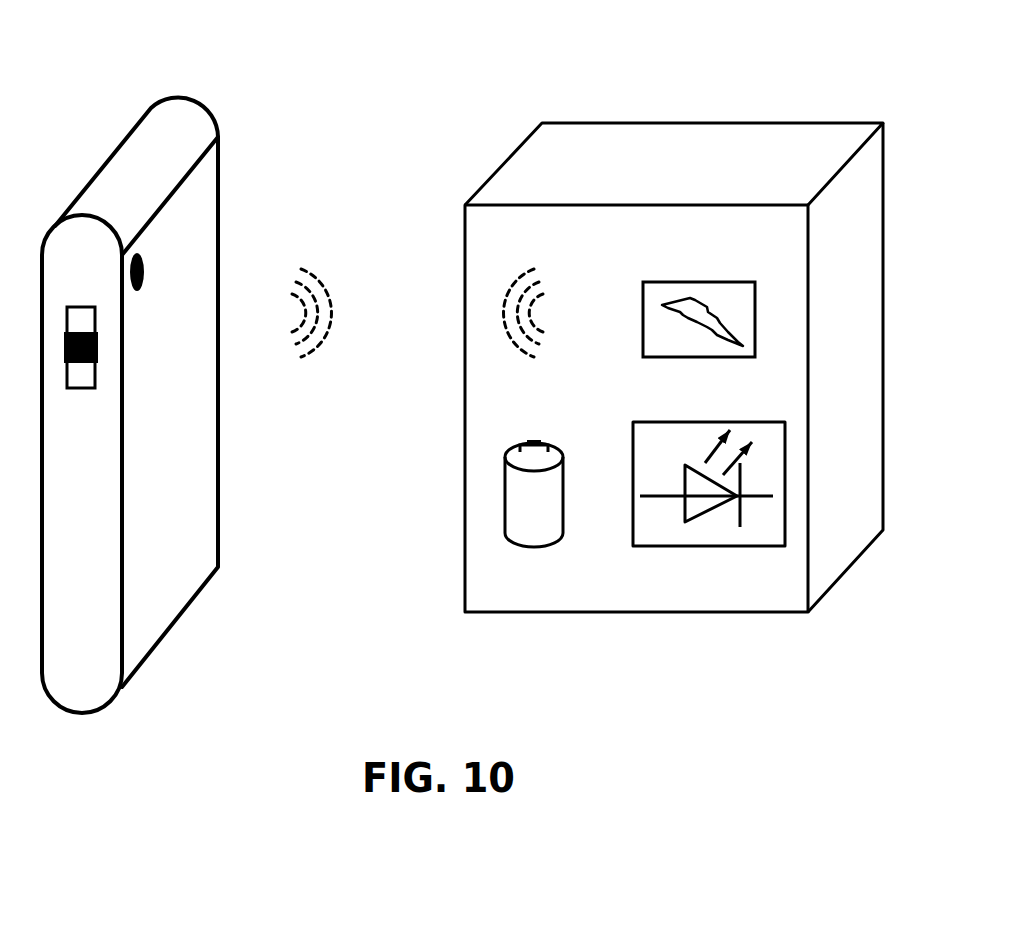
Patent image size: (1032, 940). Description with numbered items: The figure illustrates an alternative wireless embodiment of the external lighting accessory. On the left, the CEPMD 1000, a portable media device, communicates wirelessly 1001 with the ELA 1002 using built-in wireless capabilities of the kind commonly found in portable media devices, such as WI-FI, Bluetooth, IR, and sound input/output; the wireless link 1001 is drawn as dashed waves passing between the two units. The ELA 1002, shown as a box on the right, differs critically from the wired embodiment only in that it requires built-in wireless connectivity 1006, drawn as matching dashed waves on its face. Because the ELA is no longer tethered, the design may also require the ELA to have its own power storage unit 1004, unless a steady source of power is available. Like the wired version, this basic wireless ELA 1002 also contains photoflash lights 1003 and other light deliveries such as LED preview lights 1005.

The CEPMD 1000 is at (183, 110).
The wireless communication 1001 is at (318, 262).
The ELA 1002 is at (788, 160).
The photoflash lights 1003 is at (698, 248).
The power storage unit 1004 is at (536, 565).
The LED preview lights 1005 is at (701, 565).
The built-in wireless connectivity 1006 is at (536, 248).